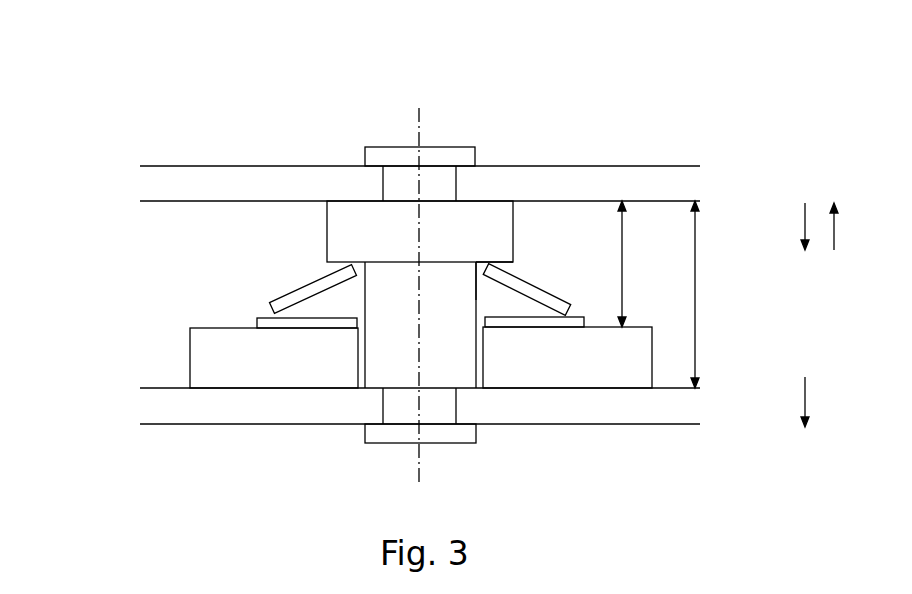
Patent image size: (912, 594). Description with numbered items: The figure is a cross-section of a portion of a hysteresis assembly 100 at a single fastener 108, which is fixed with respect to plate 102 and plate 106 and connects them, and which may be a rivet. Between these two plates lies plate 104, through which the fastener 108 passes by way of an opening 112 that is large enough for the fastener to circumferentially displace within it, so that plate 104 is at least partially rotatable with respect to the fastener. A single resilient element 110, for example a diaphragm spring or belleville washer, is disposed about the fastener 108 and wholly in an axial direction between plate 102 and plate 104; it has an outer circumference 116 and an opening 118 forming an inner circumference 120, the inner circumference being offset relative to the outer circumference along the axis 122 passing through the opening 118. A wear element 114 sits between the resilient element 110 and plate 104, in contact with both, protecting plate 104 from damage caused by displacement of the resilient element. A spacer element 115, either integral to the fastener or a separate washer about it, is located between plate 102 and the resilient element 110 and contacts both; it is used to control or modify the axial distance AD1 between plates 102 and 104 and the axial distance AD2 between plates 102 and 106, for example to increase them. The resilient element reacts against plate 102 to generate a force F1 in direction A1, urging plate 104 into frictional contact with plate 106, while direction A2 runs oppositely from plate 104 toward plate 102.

The hysteresis assembly 100 is at (642, 118).
The plate 102 is at (178, 187).
The plate 104 is at (189, 365).
The plate 106 is at (188, 403).
The fastener 108 is at (387, 139).
The resilient element 110 is at (289, 294).
The opening 112 is at (481, 383).
The wear element 114 is at (257, 322).
The spacer element 115 is at (326, 229).
The outer circumference 116 is at (268, 309).
The opening 118 is at (513, 270).
The inner circumference 120 is at (485, 262).
The axis 122 is at (420, 178).
The axial distance AD1 is at (623, 267).
The axial distance AD2 is at (697, 318).
The direction A1 is at (802, 235).
The direction A2 is at (838, 236).
The net force F1 is at (803, 405).